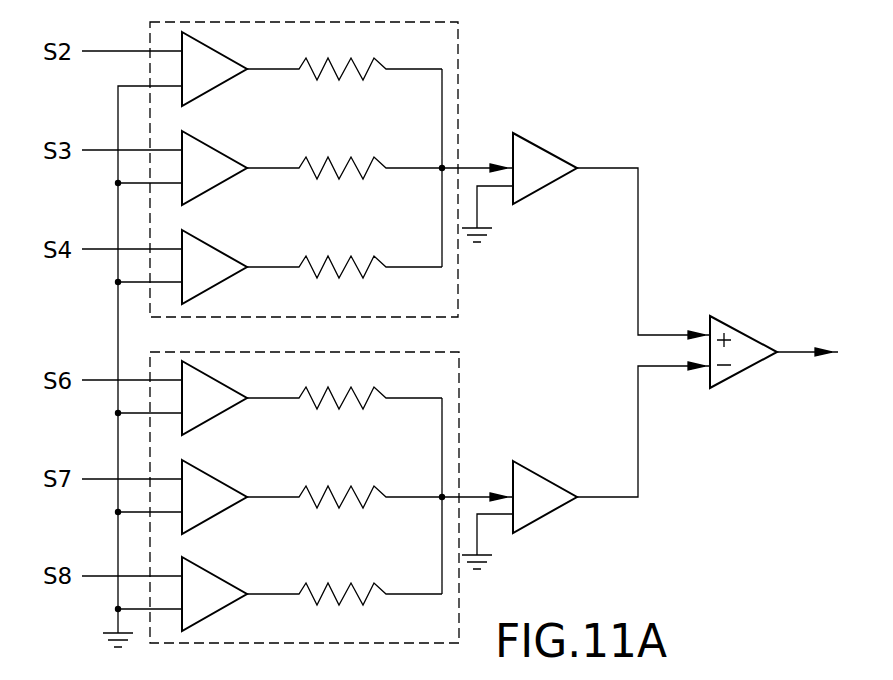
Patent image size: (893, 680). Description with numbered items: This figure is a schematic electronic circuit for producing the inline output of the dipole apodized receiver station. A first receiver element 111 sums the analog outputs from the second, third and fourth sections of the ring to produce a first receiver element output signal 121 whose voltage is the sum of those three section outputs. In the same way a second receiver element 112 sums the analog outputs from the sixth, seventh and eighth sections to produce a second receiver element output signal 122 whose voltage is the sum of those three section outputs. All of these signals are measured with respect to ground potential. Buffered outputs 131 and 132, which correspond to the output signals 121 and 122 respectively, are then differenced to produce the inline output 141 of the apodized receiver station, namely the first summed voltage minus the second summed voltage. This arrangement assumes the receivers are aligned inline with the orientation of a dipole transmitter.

The first receiver element 111 is at (458, 66).
The second receiver element 112 is at (459, 393).
The first receiver element output signal 121 is at (473, 168).
The second receiver element output signal 122 is at (472, 497).
The buffered output 131 is at (665, 334).
The buffered output 132 is at (660, 367).
The inline output 141 is at (795, 350).